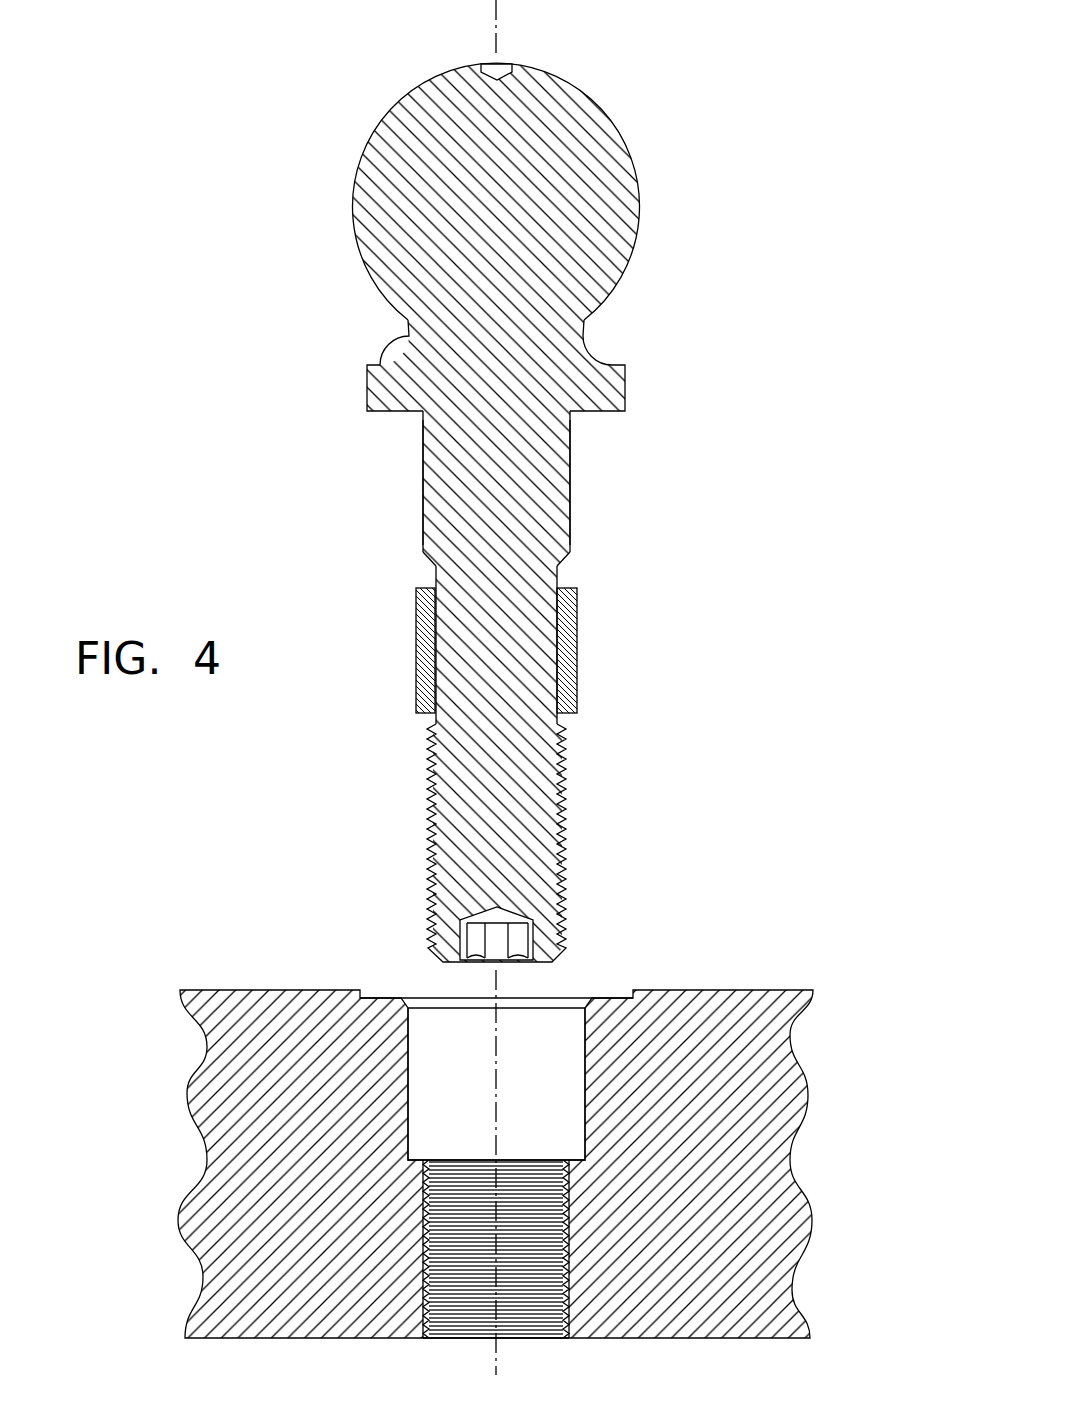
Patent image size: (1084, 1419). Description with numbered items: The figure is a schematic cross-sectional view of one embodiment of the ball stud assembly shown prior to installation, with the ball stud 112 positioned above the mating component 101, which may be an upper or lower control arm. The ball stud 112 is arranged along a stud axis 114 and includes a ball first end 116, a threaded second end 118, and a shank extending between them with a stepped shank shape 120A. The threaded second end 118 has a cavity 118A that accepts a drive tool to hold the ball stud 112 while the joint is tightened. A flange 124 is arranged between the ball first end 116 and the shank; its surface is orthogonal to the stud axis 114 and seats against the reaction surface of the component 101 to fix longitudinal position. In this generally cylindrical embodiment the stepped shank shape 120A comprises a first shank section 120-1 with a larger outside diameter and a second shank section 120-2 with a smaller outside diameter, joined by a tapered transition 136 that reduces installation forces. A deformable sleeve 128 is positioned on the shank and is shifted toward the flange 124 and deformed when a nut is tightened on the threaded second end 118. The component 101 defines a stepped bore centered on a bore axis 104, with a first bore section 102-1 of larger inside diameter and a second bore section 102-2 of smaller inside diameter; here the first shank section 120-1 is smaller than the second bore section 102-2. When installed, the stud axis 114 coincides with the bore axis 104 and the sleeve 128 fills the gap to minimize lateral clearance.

The component 101 is at (848, 1002).
The first bore section 102-1 is at (408, 1062).
The second bore section 102-2 is at (560, 1225).
The bore axis 104 is at (500, 1310).
The ball stud 112 is at (318, 246).
The stud axis 114 is at (500, 33).
The ball first end 116 is at (640, 222).
The threaded second end 118 is at (576, 838).
The cavity 118A is at (517, 967).
The stepped shank shape 120A is at (580, 457).
The first shank section 120-1 is at (570, 523).
The second shank section 120-2 is at (561, 731).
The flange 124 is at (366, 392).
The sleeve 128 is at (586, 643).
The tapered transition 136 is at (428, 565).